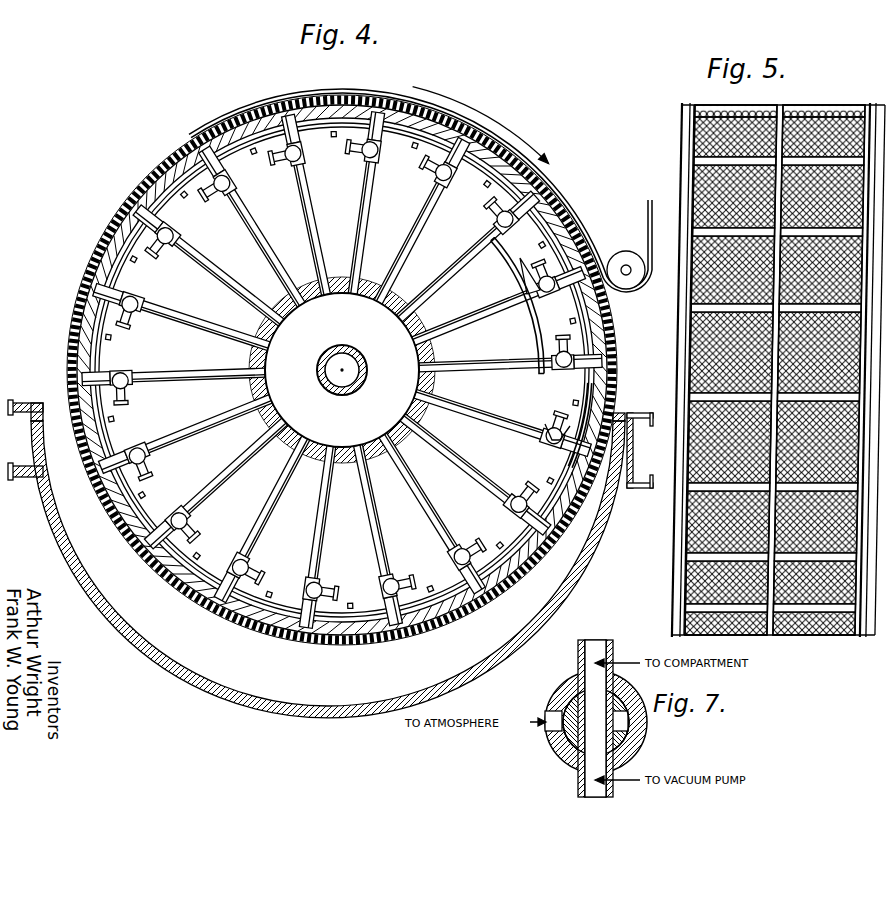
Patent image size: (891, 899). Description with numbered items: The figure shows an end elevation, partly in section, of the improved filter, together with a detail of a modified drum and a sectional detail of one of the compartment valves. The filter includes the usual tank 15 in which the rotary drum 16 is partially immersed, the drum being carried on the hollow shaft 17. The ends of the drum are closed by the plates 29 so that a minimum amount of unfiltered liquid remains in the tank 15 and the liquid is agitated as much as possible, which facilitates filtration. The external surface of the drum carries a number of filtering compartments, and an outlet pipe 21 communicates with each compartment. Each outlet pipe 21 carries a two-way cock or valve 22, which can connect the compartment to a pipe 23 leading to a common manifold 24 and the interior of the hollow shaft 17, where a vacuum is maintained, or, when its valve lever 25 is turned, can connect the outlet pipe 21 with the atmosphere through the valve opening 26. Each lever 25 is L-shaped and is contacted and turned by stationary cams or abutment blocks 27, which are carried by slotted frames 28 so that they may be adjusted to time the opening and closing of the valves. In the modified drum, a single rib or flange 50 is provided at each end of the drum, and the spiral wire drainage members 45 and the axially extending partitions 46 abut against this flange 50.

In FIG. 4, the tank 15 is at (248, 690).
In FIG. 4, the rotary drum 16 is at (420, 124).
In FIG. 4, the hollow shaft 17 is at (318, 367).
In FIG. 4, the outlet pipe 21 is at (513, 198).
In FIG. 7, the outlet pipe 21 is at (593, 652).
In FIG. 4, the two-way cock or valve 22 is at (237, 178).
In FIG. 4, the pipe 23 is at (464, 412).
In FIG. 7, the pipe 23 is at (610, 776).
In FIG. 4, the manifold 24 is at (342, 370).
In FIG. 4, the valve lever 25 is at (433, 172).
In FIG. 7, the valve opening 26 is at (545, 738).
In FIG. 4, the stationary cams or abutment blocks 27 is at (530, 268).
In FIG. 4, the slotted frames 28 is at (527, 333).
In FIG. 4, the plates 29 is at (342, 369).
In FIG. 5, the screen section 45 is at (850, 110).
In FIG. 5, the axially extending partitions 46 is at (738, 108).
In FIG. 5, the rib or flange 50 is at (684, 108).